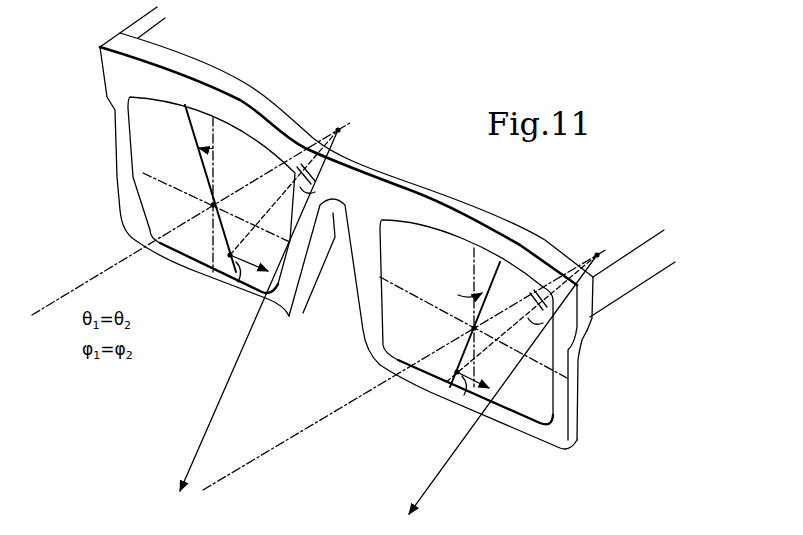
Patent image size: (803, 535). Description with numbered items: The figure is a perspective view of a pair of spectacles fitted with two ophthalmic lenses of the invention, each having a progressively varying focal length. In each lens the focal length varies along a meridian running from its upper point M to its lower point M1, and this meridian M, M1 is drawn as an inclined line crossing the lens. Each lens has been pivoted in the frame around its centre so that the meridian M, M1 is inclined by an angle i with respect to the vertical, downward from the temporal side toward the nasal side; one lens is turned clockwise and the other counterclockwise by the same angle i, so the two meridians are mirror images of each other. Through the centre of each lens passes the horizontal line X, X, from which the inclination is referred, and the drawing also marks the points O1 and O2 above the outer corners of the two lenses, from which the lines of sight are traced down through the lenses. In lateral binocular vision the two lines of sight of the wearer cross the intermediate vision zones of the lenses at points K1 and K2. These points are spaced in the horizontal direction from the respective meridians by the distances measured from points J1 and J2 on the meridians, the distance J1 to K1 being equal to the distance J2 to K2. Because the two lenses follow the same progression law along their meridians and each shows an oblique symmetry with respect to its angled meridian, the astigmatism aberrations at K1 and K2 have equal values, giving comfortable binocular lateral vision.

The meridian upper point M is at (188, 128).
The inclination angle i is at (340, 252).
The horizontal line X is at (143, 173).
The meridian point of first lens J1 is at (228, 254).
The meridian point of second lens J2 is at (458, 375).
The meridian lower point M1 is at (229, 258).
The line of sight intersection point of first lens K1 is at (290, 296).
The line of sight intersection point of second lens K2 is at (497, 390).
The optical center / rotation point left O1 is at (338, 130).
The optical center / rotation point right O2 is at (597, 255).